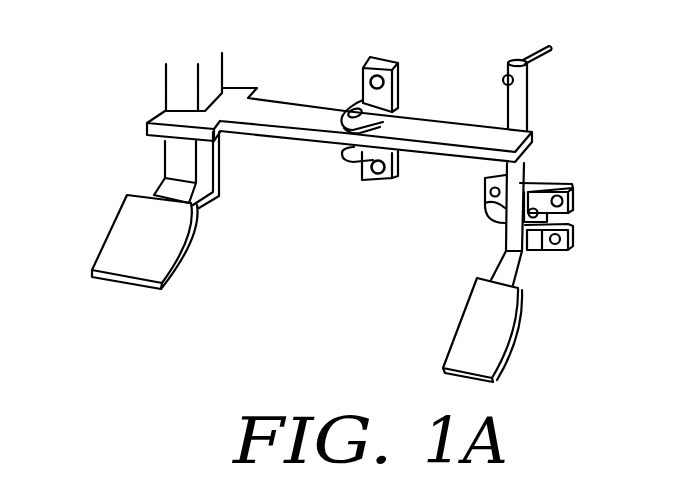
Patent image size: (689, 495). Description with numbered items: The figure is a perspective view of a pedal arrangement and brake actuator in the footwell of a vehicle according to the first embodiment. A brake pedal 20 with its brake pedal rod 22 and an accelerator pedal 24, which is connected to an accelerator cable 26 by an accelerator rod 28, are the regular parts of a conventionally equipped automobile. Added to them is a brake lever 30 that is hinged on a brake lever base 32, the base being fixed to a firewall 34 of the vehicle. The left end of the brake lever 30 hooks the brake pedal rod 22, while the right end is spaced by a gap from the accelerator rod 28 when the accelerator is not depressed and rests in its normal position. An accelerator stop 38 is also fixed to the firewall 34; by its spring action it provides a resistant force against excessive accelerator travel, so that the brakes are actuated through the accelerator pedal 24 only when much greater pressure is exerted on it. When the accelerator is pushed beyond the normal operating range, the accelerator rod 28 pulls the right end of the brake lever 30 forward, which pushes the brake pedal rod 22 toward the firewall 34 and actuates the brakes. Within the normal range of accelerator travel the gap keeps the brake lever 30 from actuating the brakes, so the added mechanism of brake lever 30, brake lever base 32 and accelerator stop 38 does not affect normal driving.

The brake pedal 20 is at (123, 232).
The brake pedal rod 22 is at (185, 76).
The accelerator pedal 24 is at (472, 327).
The accelerator cable 26 is at (543, 47).
The accelerator rod 28 is at (522, 108).
The brake lever 30 is at (290, 112).
The brake lever base 32 is at (363, 181).
The firewall 34 is at (430, 64).
The accelerator stop 38 is at (547, 254).